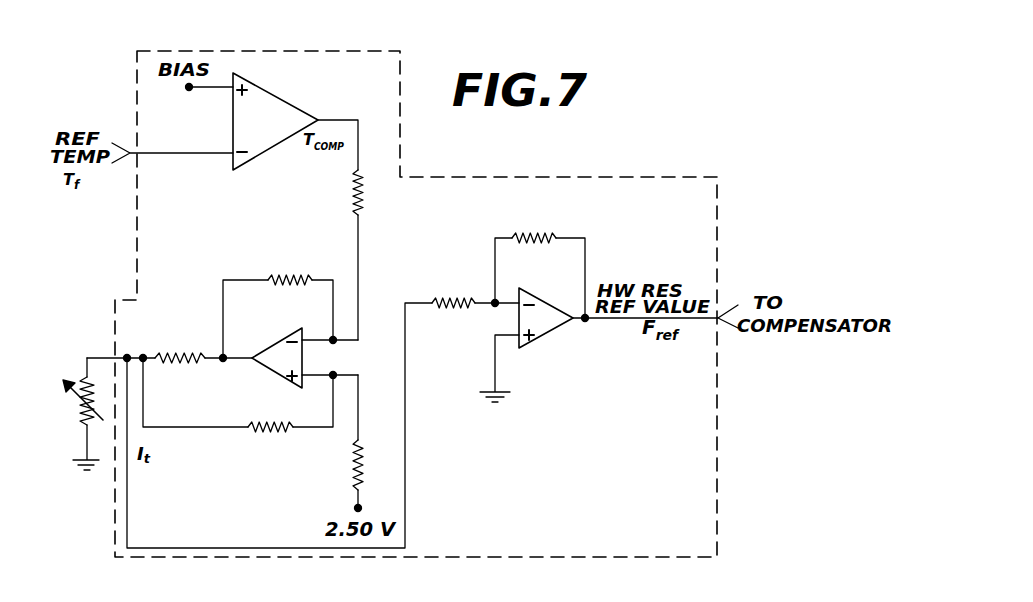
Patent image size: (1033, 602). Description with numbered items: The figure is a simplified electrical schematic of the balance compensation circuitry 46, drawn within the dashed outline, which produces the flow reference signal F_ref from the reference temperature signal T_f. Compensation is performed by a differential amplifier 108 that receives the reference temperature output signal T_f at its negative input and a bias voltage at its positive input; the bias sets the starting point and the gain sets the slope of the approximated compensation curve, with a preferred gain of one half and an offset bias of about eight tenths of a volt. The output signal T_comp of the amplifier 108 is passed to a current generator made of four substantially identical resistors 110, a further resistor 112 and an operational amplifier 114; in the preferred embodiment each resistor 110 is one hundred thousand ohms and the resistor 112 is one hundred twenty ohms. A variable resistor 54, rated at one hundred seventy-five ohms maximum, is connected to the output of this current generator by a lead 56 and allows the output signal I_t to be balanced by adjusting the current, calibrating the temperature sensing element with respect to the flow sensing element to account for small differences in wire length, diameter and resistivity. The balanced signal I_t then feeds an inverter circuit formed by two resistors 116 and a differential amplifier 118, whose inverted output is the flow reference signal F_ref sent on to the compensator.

The balance compensation circuitry 46 is at (555, 177).
The variable resistor 54 is at (82, 408).
The lead 56 is at (87, 358).
The differential amplifier 108 is at (297, 107).
The resistors 110 is at (352, 191).
The resistor 112 is at (178, 364).
The operational amplifier 114 is at (268, 346).
The resistors 116 is at (453, 300).
The differential amplifier 118 is at (550, 292).